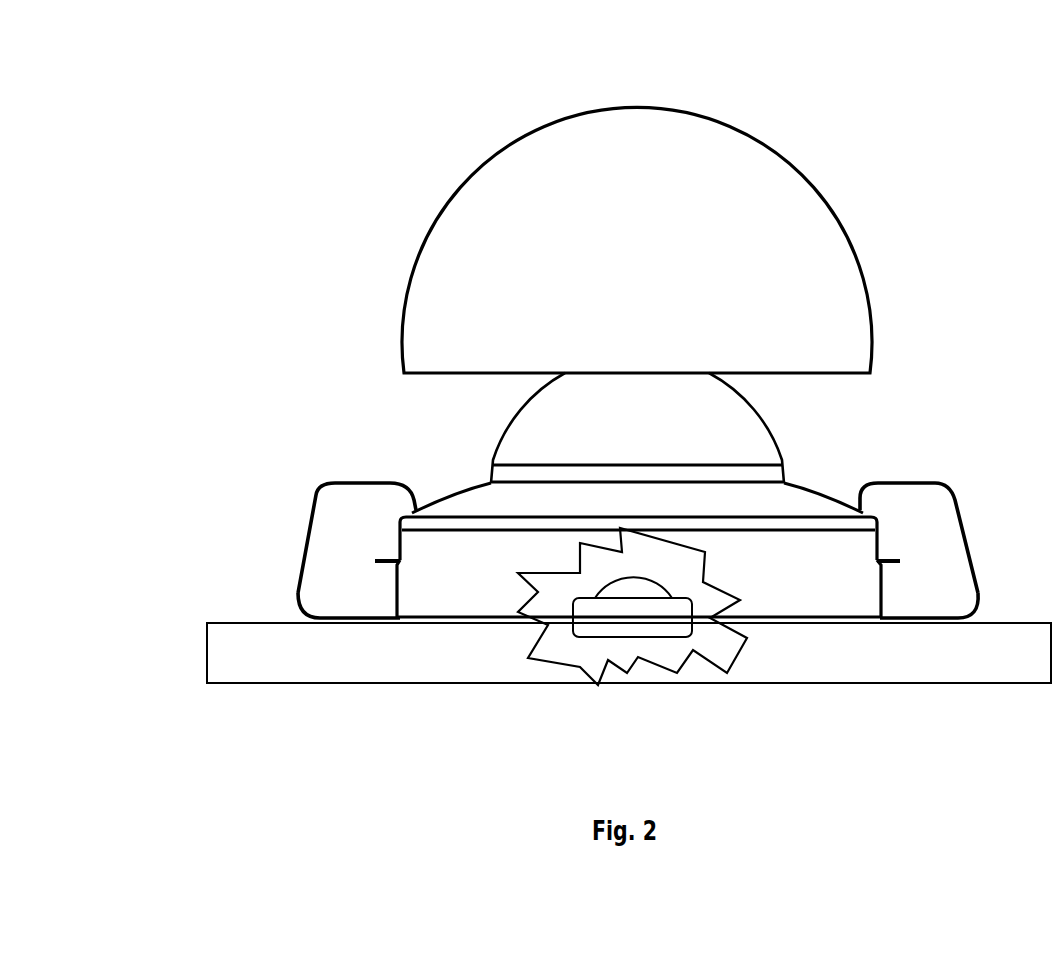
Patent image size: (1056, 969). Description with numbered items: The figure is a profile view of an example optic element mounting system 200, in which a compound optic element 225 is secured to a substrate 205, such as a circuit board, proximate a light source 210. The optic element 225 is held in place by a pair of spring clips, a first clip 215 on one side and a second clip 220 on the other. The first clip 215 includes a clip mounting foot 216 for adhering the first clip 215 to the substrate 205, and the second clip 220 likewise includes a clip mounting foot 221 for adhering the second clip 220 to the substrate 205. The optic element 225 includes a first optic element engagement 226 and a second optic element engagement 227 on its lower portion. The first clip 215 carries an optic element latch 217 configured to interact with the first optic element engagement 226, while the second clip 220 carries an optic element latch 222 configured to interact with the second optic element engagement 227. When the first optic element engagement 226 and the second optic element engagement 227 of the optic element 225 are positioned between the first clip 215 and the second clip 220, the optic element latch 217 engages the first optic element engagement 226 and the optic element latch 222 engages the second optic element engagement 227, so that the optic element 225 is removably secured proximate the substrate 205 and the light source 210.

The optic element mounting system 200 is at (233, 122).
The substrate 205 is at (333, 657).
The light source 210 is at (632, 615).
The first clip 215 is at (307, 520).
The clip mounting foot 216 is at (327, 617).
The optic element latch 217 is at (380, 560).
The second clip 220 is at (963, 517).
The clip mounting foot 221 is at (915, 615).
The optic element latch 222 is at (898, 562).
The optic element 225 is at (703, 205).
The first optic element engagement 226 is at (400, 567).
The second optic element engagement 227 is at (877, 568).